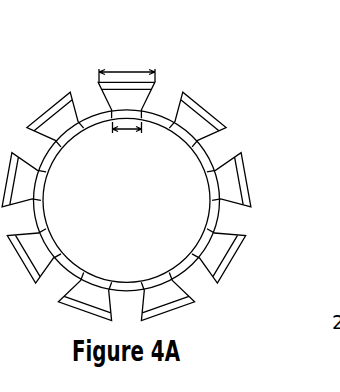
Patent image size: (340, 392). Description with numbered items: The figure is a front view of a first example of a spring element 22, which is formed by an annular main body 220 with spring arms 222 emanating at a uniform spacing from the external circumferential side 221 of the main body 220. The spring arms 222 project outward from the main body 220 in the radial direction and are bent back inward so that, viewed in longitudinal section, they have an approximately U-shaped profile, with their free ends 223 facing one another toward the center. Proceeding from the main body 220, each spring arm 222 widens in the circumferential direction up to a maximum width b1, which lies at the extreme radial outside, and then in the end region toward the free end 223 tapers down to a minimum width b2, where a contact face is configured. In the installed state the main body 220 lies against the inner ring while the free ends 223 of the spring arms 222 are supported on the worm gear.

The spring element 22 is at (184, 73).
The annular main body 220 is at (208, 152).
The external circumferential side 221 is at (217, 220).
The spring arms 222 is at (228, 268).
The free end 223 is at (92, 279).
The maximum width b1 is at (127, 72).
The minimum width b2 is at (128, 133).